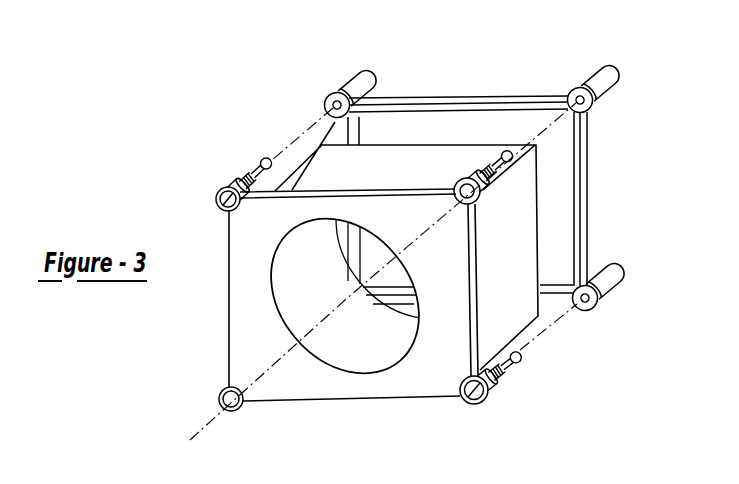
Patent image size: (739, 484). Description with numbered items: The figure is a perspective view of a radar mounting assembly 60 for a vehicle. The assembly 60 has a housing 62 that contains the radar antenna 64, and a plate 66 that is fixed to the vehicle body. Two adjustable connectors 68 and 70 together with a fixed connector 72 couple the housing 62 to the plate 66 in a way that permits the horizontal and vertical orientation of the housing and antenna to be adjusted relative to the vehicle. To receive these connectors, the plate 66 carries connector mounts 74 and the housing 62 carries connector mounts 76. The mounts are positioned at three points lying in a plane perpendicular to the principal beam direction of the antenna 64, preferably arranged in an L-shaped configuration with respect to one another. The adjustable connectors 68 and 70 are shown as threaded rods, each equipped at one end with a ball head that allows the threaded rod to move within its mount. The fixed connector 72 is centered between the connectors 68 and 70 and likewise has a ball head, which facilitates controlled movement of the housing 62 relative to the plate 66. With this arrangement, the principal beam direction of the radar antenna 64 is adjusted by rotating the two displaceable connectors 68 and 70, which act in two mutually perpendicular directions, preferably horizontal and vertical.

The mounting assembly 60 is at (565, 421).
The housing 62 is at (521, 263).
The radar antenna 64 is at (280, 366).
The plate 66 is at (583, 187).
The adjustable connector 68 is at (497, 384).
The adjustable connector 70 is at (254, 163).
The fixed connector 72 is at (488, 182).
The connector mounts 74 is at (362, 82).
The connector mounts 76 is at (215, 203).